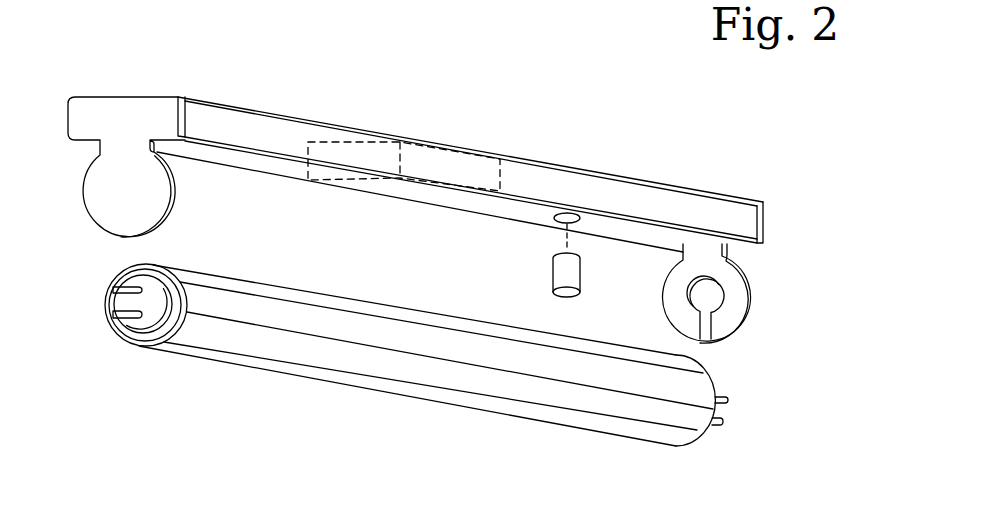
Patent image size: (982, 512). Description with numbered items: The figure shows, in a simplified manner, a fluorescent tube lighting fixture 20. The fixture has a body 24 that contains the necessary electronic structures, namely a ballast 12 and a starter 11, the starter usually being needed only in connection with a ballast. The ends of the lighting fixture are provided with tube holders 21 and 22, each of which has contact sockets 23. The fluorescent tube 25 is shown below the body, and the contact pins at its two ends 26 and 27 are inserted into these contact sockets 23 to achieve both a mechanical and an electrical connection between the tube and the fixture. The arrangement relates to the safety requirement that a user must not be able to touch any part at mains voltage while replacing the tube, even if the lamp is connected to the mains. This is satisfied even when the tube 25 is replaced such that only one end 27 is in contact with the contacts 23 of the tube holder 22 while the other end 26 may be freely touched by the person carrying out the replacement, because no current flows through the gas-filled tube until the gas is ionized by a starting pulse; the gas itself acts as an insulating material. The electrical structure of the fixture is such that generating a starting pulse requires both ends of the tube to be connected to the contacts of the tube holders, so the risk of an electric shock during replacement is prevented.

The starter 11 is at (552, 270).
The ballast 12 is at (357, 141).
The fluorescent tube lighting fixture 20 is at (460, 160).
The tube holder 21 is at (110, 212).
The tube holder 22 is at (738, 293).
The contact socket 23 is at (722, 300).
The body 24 is at (258, 110).
The tube 25 is at (412, 377).
The end of the tube 26 is at (108, 348).
The end of the tube 27 is at (722, 438).